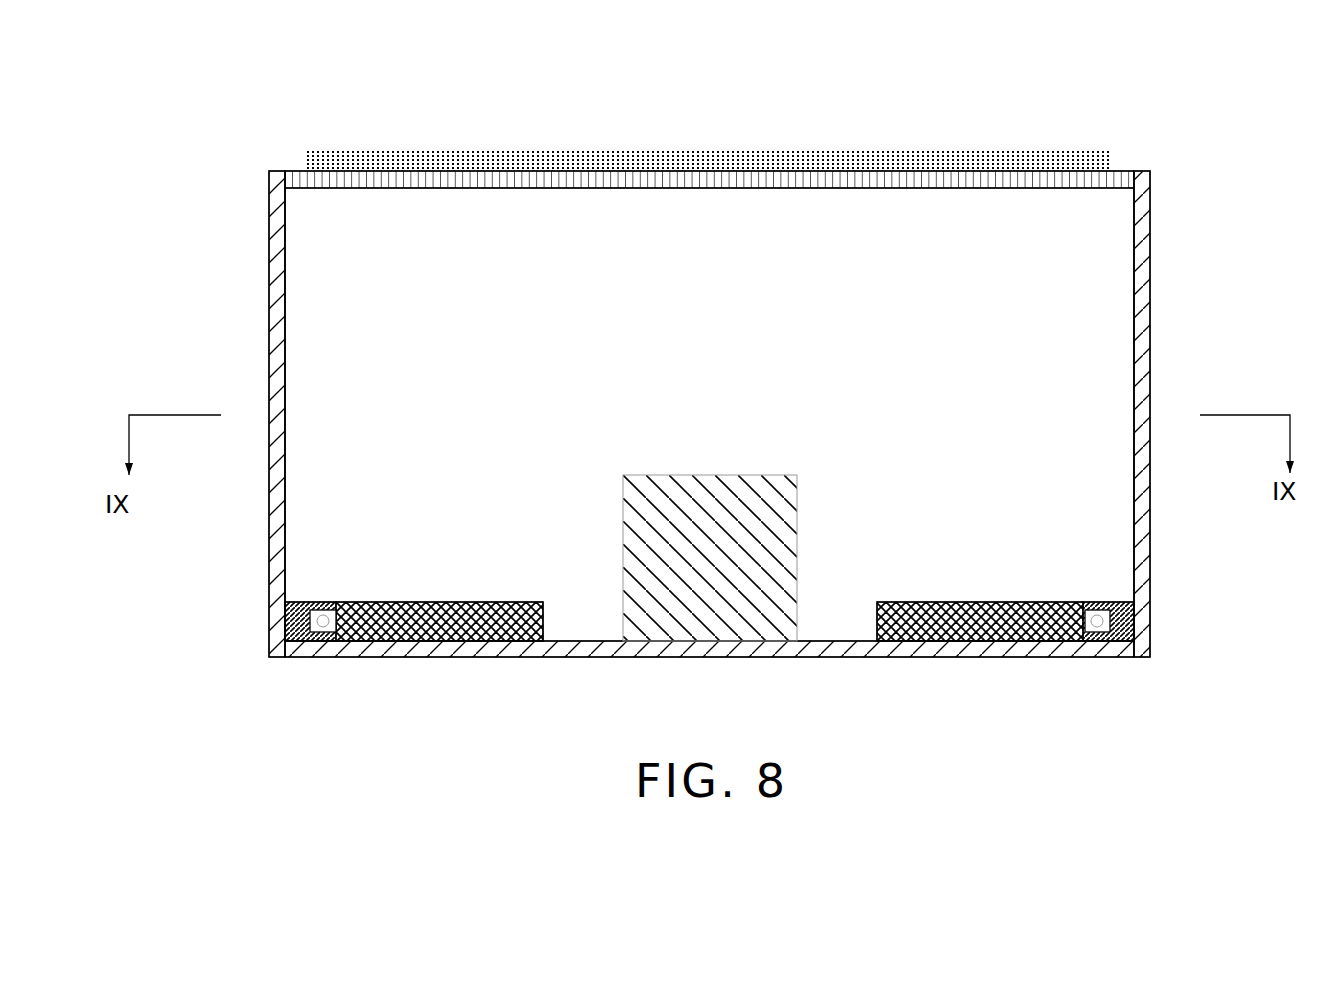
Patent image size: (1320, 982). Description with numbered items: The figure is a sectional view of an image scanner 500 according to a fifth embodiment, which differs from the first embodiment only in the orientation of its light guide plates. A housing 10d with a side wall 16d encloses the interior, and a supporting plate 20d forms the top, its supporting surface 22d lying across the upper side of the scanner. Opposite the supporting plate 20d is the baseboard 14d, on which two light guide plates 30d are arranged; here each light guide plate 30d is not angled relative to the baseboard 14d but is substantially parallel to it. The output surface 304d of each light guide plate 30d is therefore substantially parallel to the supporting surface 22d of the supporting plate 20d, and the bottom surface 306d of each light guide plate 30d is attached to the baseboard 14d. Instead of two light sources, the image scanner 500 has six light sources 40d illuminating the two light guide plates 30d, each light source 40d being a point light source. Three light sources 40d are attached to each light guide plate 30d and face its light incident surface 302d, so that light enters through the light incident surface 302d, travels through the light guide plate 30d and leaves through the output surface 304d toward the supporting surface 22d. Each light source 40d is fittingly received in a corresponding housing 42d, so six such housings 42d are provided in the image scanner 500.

The image scanner 500 is at (273, 82).
The housing 10d is at (243, 295).
The side wall 16d is at (280, 248).
The supporting plate 20d is at (1128, 178).
The supporting surface 22d is at (997, 165).
The baseboard 14d is at (755, 650).
The light guide plate 30d is at (1025, 615).
The output surface 304d is at (1010, 596).
The light incident surface 302d is at (1094, 636).
The bottom surface 306d is at (923, 645).
The light source 40d is at (1133, 622).
The LED chip 42d is at (1103, 621).